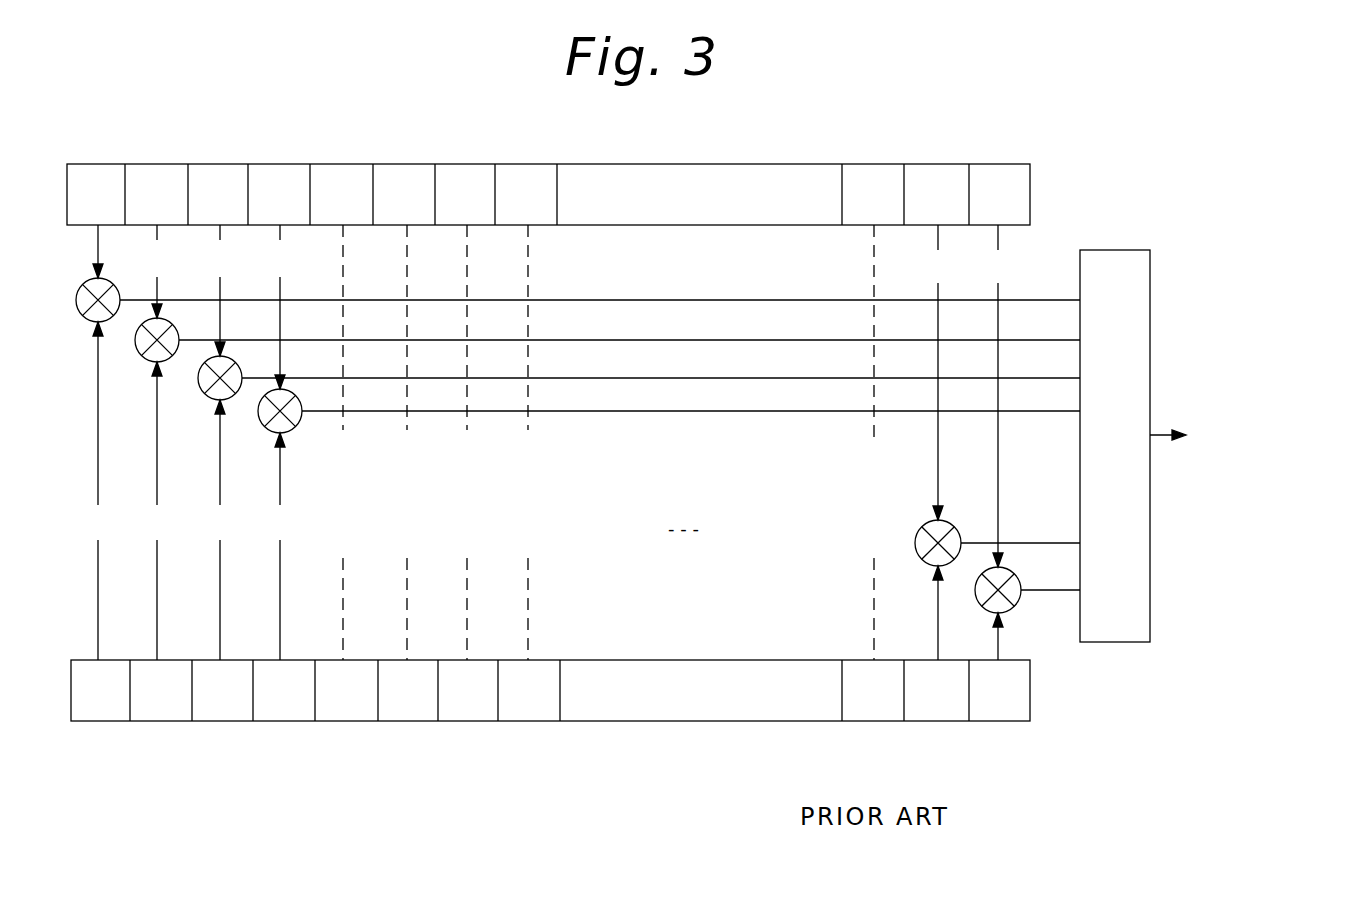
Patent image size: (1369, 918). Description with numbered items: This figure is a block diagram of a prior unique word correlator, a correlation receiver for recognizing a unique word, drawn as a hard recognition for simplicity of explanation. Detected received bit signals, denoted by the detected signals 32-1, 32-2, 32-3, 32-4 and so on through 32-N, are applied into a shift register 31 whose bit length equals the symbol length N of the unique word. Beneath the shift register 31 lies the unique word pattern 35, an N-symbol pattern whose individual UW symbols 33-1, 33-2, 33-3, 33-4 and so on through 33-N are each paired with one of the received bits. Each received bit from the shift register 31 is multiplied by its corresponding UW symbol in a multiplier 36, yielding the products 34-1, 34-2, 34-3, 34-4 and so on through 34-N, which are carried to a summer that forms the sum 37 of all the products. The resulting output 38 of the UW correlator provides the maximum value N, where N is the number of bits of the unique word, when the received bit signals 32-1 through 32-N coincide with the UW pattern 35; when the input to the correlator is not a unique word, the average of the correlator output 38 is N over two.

The shift register 31 is at (550, 175).
The detected signal b_n 32-1 is at (97, 242).
The detected signal 32-2 is at (150, 271).
The detected signal 32-3 is at (215, 290).
The detected signal 32-4 is at (273, 307).
The detected signal b_n-N+1 32-N is at (1008, 396).
The UW symbol 33-1 is at (82, 491).
The UW symbol 33-2 is at (153, 511).
The UW symbol 33-3 is at (228, 530).
The UW symbol 33-4 is at (300, 546).
The UW symbol 33-N is at (1031, 636).
The product 34-1 is at (600, 283).
The product 34-2 is at (629, 325).
The product 34-3 is at (661, 362).
The product 34-4 is at (691, 396).
The product 34-N is at (1050, 572).
The unique word pattern 35 is at (550, 713).
The multiplier 36 is at (80, 312).
The sum 37 is at (1110, 250).
The output 38 is at (1158, 430).